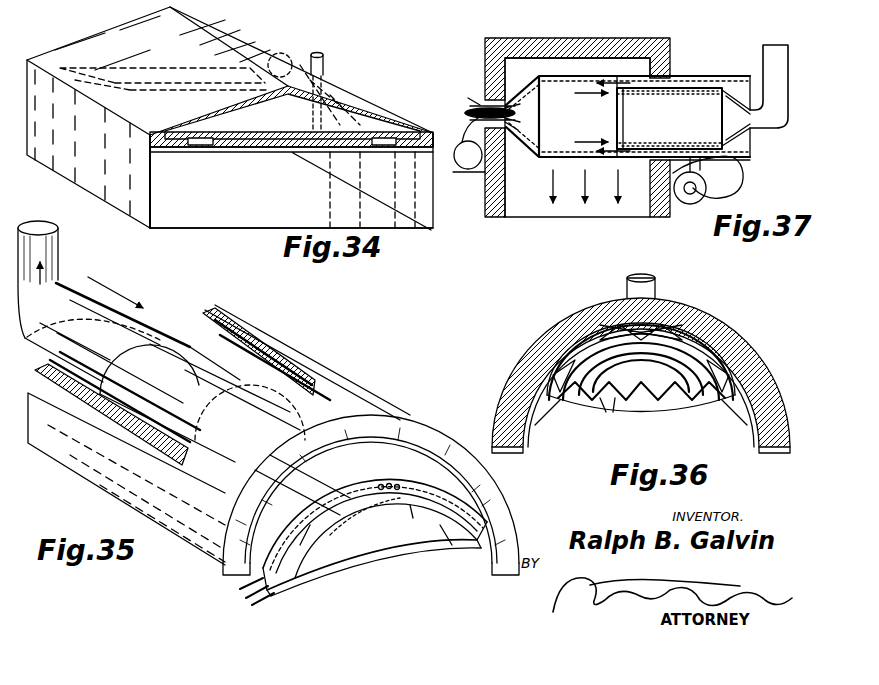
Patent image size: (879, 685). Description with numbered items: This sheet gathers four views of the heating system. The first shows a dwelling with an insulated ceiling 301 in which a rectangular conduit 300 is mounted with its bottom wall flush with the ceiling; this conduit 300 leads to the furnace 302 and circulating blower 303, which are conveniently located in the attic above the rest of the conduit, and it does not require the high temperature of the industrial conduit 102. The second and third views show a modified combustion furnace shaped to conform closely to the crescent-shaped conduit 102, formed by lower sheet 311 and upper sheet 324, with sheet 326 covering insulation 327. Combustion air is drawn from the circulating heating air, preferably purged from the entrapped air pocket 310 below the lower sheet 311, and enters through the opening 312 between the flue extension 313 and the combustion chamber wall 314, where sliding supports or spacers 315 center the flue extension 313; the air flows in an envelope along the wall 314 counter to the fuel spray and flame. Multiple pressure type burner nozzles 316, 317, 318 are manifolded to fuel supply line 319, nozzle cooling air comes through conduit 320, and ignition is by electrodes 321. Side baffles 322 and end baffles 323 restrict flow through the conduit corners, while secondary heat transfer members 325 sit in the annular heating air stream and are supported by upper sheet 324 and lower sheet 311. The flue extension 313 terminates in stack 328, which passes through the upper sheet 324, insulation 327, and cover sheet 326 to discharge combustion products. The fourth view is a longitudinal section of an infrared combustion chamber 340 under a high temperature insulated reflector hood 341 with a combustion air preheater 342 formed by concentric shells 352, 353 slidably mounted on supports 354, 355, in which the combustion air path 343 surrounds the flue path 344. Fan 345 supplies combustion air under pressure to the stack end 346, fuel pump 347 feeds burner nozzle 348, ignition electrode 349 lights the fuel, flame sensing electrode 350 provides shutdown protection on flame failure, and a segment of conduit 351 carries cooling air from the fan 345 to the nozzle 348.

In FIG. 35, the conduit 102 is at (360, 395).
In FIG. 34, the conduit 300 is at (196, 130).
In FIG. 34, the insulated ceiling 301 is at (322, 153).
In FIG. 34, the furnace 302 is at (337, 95).
In FIG. 34, the circulating blower 303 is at (289, 92).
In FIG. 35, the entrapped air pocket 310 is at (408, 552).
In FIG. 36, the entrapped air pocket 310 is at (615, 412).
In FIG. 35, the conduit lower sheet 311 is at (322, 568).
In FIG. 36, the conduit lower sheet 311 is at (650, 398).
In FIG. 35, the opening 312 is at (133, 450).
In FIG. 36, the opening 312 is at (675, 400).
In FIG. 35, the flue extension 313 is at (152, 325).
In FIG. 36, the flue extension 313 is at (700, 330).
In FIG. 35, the combustion chamber wall 314 is at (288, 352).
In FIG. 36, the combustion chamber wall 314 is at (680, 312).
In FIG. 36, the sliding supports or spacers 315 is at (600, 315).
In FIG. 35, the pressure type burner nozzle 316 is at (355, 535).
In FIG. 35, the pressure type burner nozzle 317 is at (410, 527).
In FIG. 35, the pressure type burner nozzle 318 is at (460, 545).
In FIG. 35, the fuel supply line 319 is at (262, 580).
In FIG. 35, the conduit 320 is at (290, 592).
In FIG. 35, the electrodes 321 is at (405, 490).
In FIG. 35, the side baffles 322 is at (315, 392).
In FIG. 36, the side baffles 322 is at (545, 420).
In FIG. 35, the end baffles 323 is at (240, 528).
In FIG. 35, the upper sheet 324 is at (435, 450).
In FIG. 36, the upper sheet 324 is at (730, 340).
In FIG. 36, the secondary heat transfer members 325 is at (603, 410).
In FIG. 35, the sheet 326 is at (400, 418).
In FIG. 36, the sheet 326 is at (745, 355).
In FIG. 35, the insulation 327 is at (205, 360).
In FIG. 36, the insulation 327 is at (752, 375).
In FIG. 36, the stack 328 is at (655, 283).
In FIG. 37, the infrared combustion chamber 340 is at (590, 62).
In FIG. 37, the high temperature insulated reflector hood 341 is at (628, 40).
In FIG. 37, the combustion air preheater 342 is at (702, 88).
In FIG. 37, the combustion air path 343 is at (645, 140).
In FIG. 37, the flue path 344 is at (690, 140).
In FIG. 37, the fan 345 is at (690, 204).
In FIG. 37, the stack end 346 is at (750, 147).
In FIG. 37, the fuel pump 347 is at (468, 170).
In FIG. 37, the burner nozzle 348 is at (520, 113).
In FIG. 37, the ignition electrode 349 is at (478, 106).
In FIG. 37, the flame sensing electrode 350 is at (510, 130).
In FIG. 37, the segment of conduit 351 is at (465, 113).
In FIG. 37, the concentric shell 352 is at (683, 90).
In FIG. 37, the concentric shell 353 is at (700, 160).
In FIG. 37, the support 354 is at (618, 112).
In FIG. 37, the support 355 is at (640, 77).